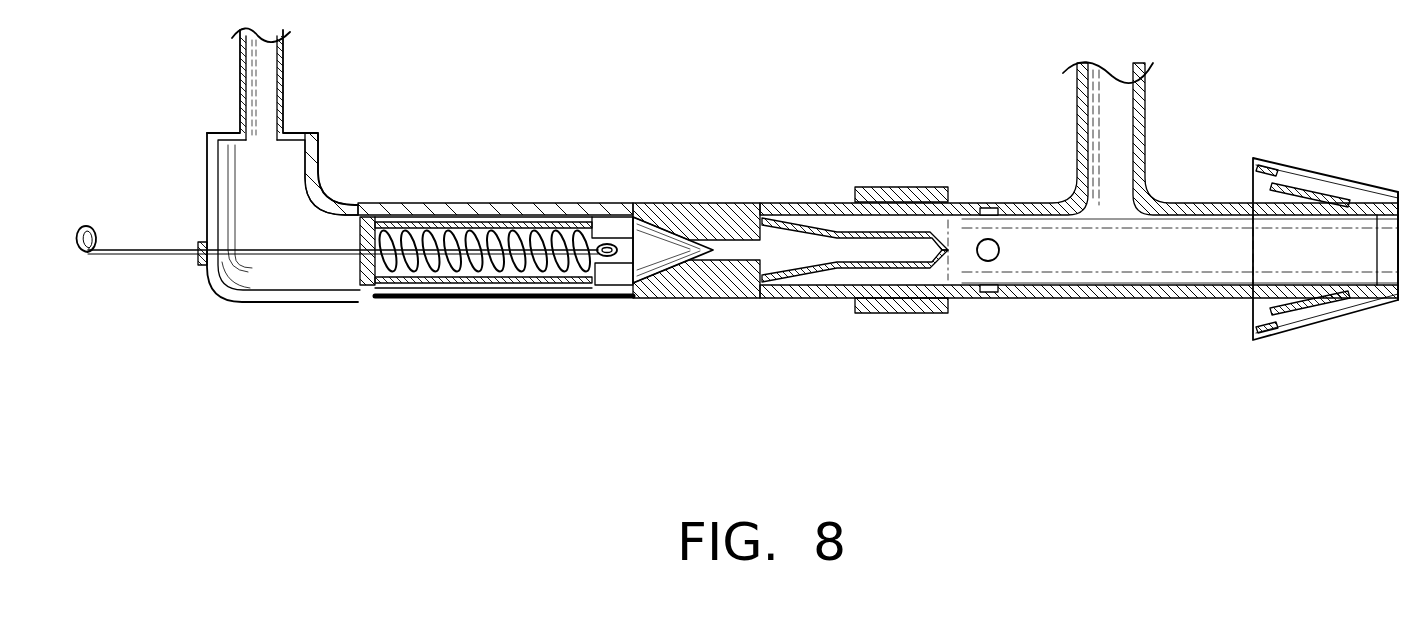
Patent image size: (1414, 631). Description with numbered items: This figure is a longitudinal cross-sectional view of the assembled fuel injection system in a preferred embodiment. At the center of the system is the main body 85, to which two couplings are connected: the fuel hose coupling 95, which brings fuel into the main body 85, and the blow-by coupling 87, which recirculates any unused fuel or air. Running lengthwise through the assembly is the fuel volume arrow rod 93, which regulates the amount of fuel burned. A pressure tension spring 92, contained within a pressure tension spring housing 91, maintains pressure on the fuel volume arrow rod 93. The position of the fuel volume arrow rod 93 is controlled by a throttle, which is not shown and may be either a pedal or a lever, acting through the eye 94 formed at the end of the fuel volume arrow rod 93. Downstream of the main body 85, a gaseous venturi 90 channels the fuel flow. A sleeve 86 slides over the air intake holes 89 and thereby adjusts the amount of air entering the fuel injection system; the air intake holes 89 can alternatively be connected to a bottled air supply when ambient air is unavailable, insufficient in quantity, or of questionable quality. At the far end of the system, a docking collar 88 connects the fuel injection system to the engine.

The main body 85 is at (720, 202).
The sleeve 86 is at (873, 188).
The blow-by coupling 87 is at (1145, 100).
The docking collar 88 is at (1343, 318).
The air intake holes 89 is at (999, 250).
The gaseous venturi 90 is at (878, 267).
The pressure tension spring housing 91 is at (476, 228).
The pressure tension spring 92 is at (470, 273).
The fuel volume arrow rod 93 is at (147, 257).
The eye 94 is at (87, 224).
The fuel hose coupling 95 is at (283, 82).